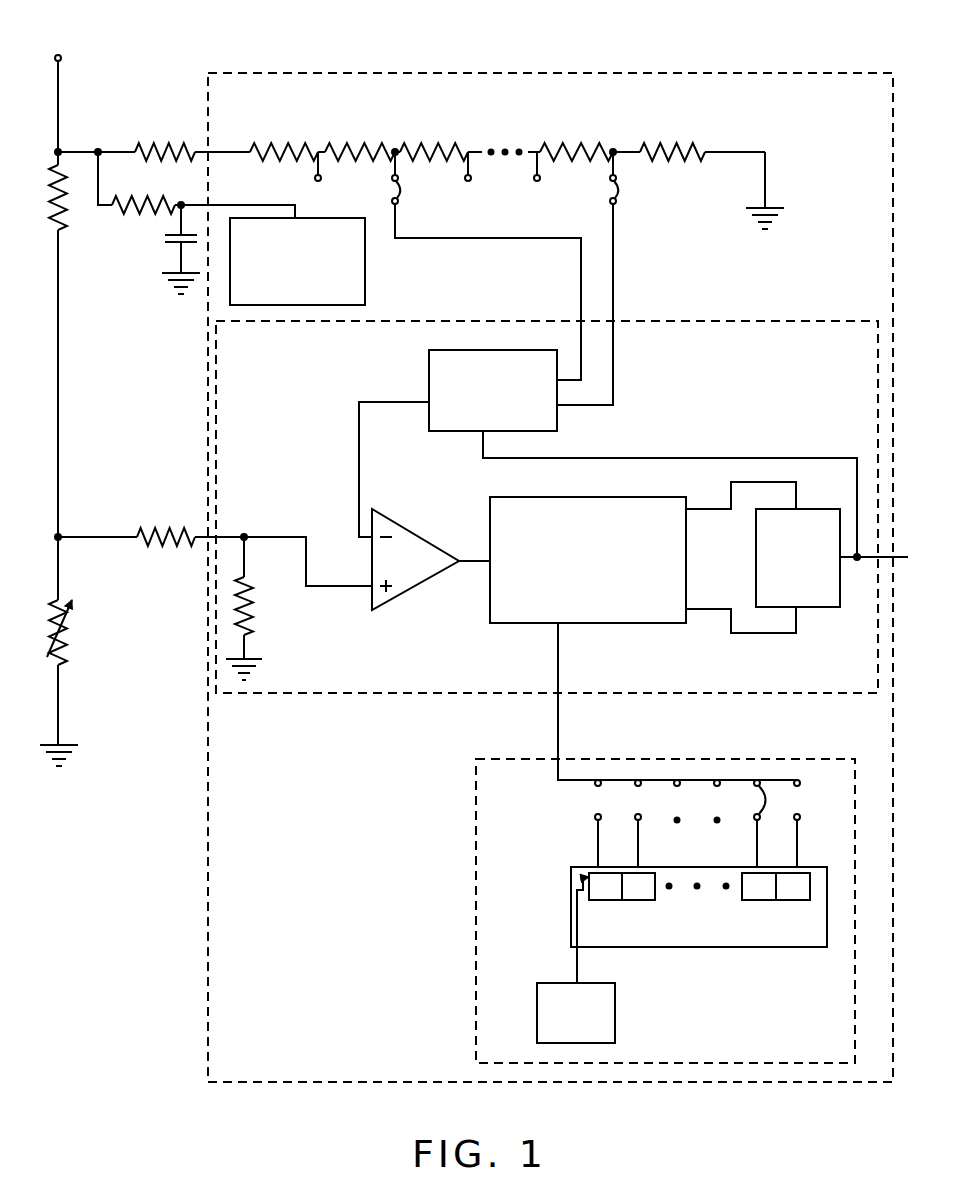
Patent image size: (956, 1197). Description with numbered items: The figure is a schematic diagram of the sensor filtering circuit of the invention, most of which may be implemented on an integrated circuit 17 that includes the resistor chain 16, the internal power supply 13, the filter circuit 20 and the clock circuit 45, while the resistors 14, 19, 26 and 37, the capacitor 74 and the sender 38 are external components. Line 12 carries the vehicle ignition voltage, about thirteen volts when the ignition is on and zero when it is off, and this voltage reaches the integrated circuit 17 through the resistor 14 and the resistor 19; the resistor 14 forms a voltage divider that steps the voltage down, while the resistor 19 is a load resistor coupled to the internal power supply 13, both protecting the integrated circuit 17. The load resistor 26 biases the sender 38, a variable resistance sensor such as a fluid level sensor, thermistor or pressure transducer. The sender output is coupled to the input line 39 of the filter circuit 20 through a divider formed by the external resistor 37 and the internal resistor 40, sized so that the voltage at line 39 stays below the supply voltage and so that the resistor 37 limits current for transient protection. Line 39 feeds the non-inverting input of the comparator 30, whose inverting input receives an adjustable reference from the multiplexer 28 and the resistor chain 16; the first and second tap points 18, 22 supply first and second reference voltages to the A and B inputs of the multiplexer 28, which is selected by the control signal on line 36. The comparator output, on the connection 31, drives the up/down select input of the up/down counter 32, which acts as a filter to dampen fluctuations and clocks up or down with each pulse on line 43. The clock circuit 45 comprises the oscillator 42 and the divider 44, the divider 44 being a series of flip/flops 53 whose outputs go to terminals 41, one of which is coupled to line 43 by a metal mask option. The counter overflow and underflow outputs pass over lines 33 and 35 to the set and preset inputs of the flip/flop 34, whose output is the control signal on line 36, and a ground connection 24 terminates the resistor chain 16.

The line 12 is at (58, 102).
The internal power supply 13 is at (365, 262).
The resistor 14 is at (160, 145).
The resistor chain 16 is at (513, 140).
The integrated circuit 17 is at (365, 73).
The first tap point 18 is at (390, 168).
The resistor 19 is at (165, 202).
The filter circuit 20 is at (740, 318).
The second tap point 22 is at (618, 165).
The ground connection 24 is at (767, 185).
The load resistor 26 is at (68, 205).
The multiplexer 28 is at (531, 348).
The comparator 30 is at (414, 550).
The multiplexer output line 31 is at (392, 400).
The up/down counter 32 is at (608, 623).
The line 33 is at (710, 507).
The flip/flop 34 is at (832, 609).
The line 35 is at (740, 635).
The line 36 is at (845, 560).
The resistor 37 is at (178, 535).
The sender 38 is at (60, 615).
The input line 39 is at (266, 535).
The resistor 40 is at (254, 605).
The terminals 41 is at (582, 845).
The oscillator 42 is at (615, 1005).
The line 43 is at (560, 725).
The divider 44 is at (685, 947).
The clock circuit 45 is at (476, 930).
The flip/flops 53 is at (584, 876).
The capacitor 74 is at (168, 240).